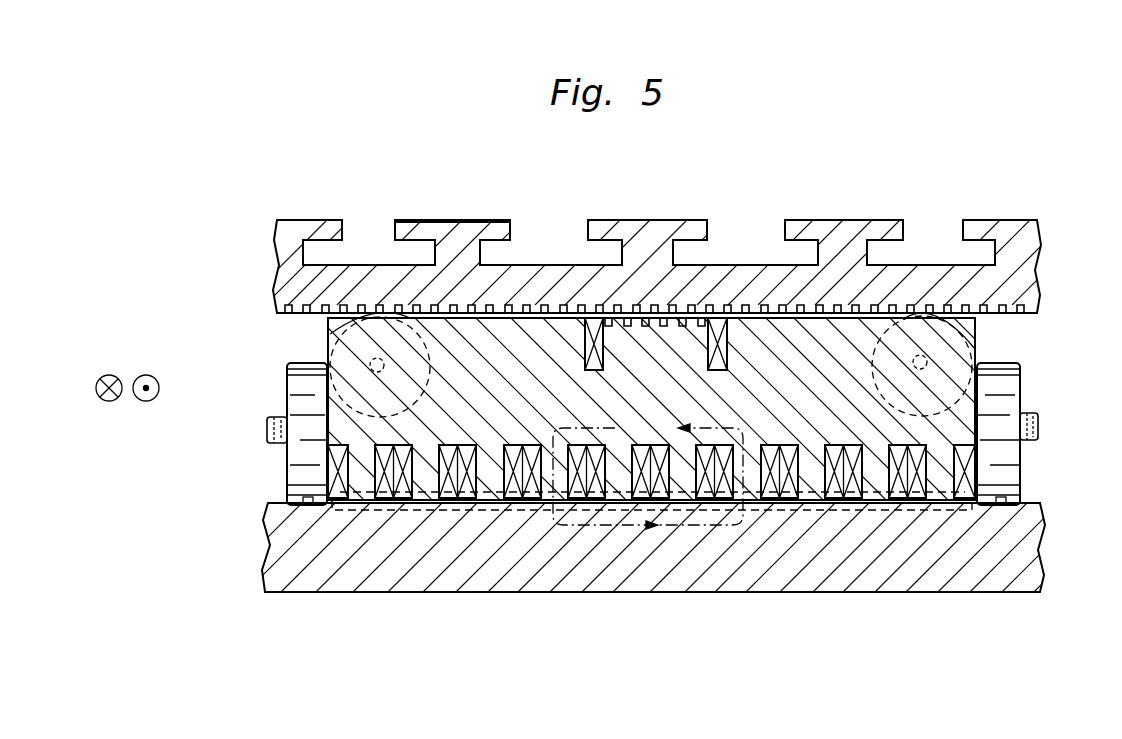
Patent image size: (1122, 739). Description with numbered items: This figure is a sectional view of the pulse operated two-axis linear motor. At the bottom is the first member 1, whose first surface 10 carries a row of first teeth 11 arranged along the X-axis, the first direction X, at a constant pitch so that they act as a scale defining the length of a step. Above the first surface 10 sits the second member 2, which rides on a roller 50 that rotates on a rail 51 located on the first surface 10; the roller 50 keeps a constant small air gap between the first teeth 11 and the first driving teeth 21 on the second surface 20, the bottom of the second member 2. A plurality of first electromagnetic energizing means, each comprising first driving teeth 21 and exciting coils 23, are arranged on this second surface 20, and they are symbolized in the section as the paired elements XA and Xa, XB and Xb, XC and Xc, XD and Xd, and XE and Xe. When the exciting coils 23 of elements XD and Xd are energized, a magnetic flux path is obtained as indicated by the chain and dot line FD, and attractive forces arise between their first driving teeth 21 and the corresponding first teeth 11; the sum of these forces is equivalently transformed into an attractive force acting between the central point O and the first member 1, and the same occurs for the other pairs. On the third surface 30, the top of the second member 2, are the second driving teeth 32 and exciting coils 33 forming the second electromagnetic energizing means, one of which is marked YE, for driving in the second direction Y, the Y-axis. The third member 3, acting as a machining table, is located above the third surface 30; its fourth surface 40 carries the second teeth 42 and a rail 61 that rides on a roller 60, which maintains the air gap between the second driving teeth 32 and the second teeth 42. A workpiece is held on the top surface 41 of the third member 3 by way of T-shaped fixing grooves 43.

The first member 1 is at (695, 604).
The second member 2 is at (455, 322).
The third member 3 is at (852, 234).
The first surface 10 is at (300, 463).
The first teeth 11 is at (451, 512).
The second surface 20 is at (427, 518).
The first driving teeth 21 is at (556, 512).
The exciting coils 23 is at (535, 478).
The third surface 30 is at (620, 316).
The second driving teeth 32 is at (658, 322).
The exciting coils 33 is at (582, 340).
The fourth surface 40 is at (305, 314).
The top surface 41 is at (425, 222).
The second teeth 42 is at (498, 308).
The T-shaped fixing grooves 43 is at (545, 248).
The roller 50 is at (300, 395).
The rail 51 is at (290, 490).
The roller 60 is at (378, 318).
The rail 61 is at (330, 336).
The X-axis X is at (127, 405).
The Y-axis Y is at (277, 285).
The second electromagnetic energizing element YE is at (640, 350).
The magnetic flux path FD is at (648, 472).
The first electromagnetic energizing element Xa is at (368, 478).
The first electromagnetic energizing element Xb is at (432, 478).
The first electromagnetic energizing element Xc is at (518, 478).
The first electromagnetic energizing element Xd is at (560, 478).
The first electromagnetic energizing element Xe is at (640, 478).
The central point O is at (680, 525).
The first electromagnetic energizing element XE is at (700, 478).
The first electromagnetic energizing element XD is at (780, 478).
The first electromagnetic energizing element XB is at (893, 478).
The first electromagnetic energizing element XA is at (962, 478).